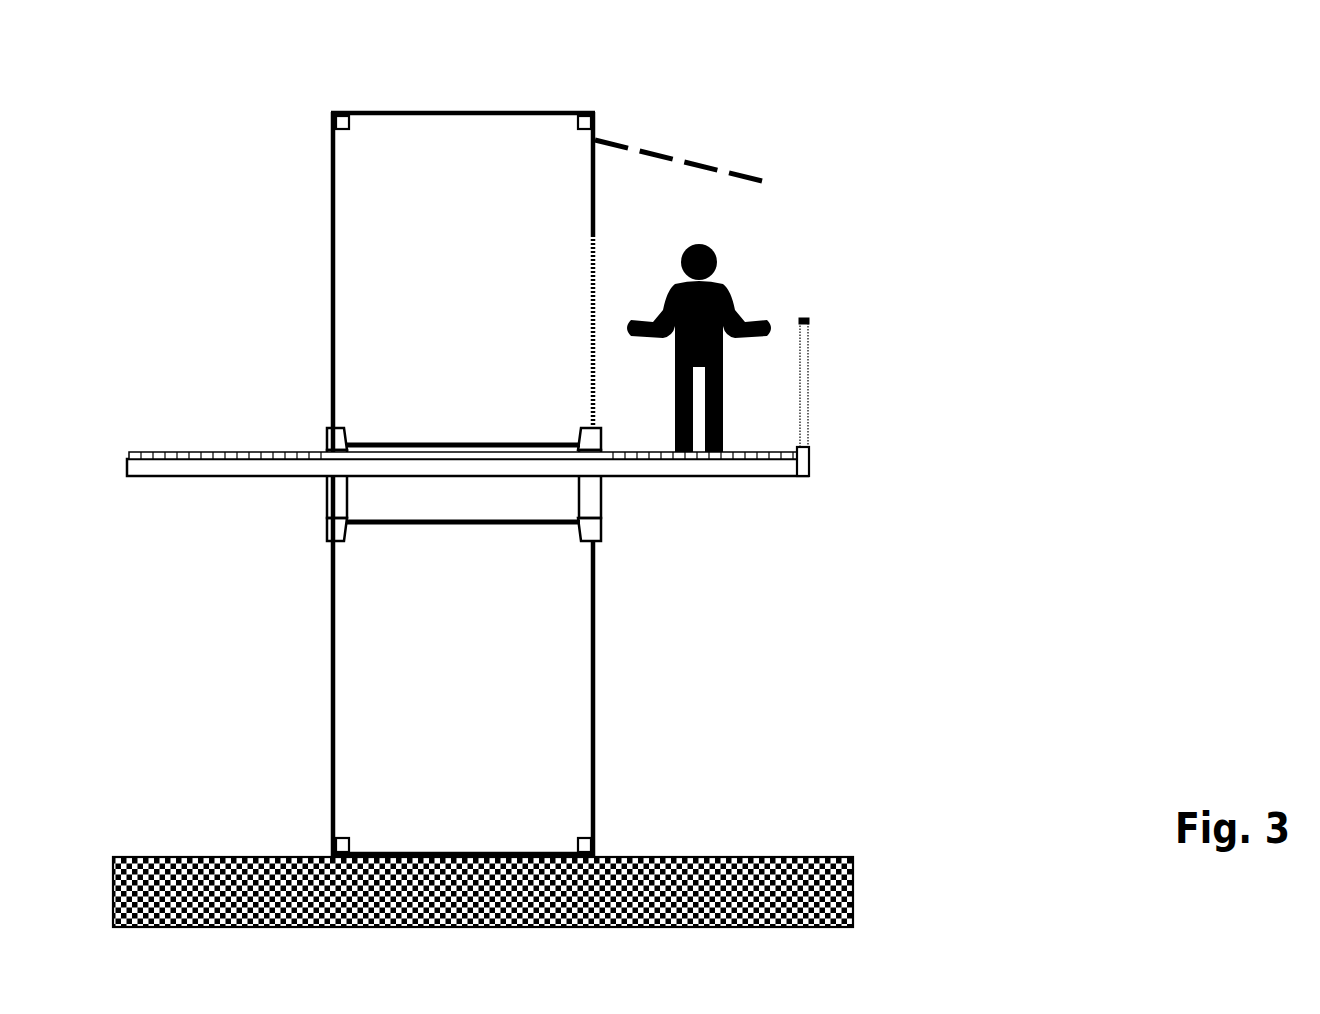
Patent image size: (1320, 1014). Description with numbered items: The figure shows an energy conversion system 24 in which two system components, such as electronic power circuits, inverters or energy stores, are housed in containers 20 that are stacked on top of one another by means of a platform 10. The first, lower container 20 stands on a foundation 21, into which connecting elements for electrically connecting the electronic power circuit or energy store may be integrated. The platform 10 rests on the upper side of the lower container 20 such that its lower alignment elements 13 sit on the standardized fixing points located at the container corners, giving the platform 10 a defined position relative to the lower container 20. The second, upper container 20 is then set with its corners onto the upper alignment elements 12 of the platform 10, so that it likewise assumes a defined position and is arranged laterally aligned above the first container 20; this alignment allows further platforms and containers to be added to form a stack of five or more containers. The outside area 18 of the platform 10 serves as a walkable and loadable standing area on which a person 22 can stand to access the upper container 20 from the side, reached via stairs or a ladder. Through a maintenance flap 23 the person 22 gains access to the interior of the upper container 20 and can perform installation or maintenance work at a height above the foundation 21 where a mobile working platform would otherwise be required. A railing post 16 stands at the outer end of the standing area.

The platform 10 is at (295, 498).
The upper alignment elements 12 is at (323, 436).
The lower alignment elements 13 is at (322, 532).
The railing post 16 is at (810, 388).
The outside area 18 is at (215, 447).
The container 20 is at (322, 268).
The foundation 21 is at (740, 873).
The person 22 is at (742, 290).
The maintenance flap 23 is at (710, 160).
The energy conversion system 24 is at (268, 78).